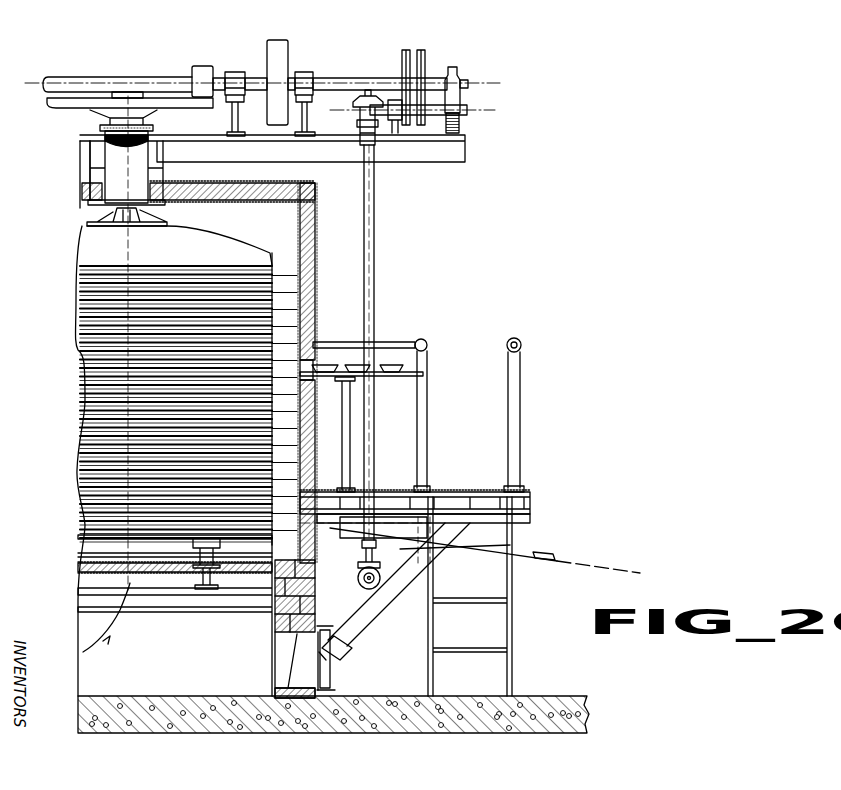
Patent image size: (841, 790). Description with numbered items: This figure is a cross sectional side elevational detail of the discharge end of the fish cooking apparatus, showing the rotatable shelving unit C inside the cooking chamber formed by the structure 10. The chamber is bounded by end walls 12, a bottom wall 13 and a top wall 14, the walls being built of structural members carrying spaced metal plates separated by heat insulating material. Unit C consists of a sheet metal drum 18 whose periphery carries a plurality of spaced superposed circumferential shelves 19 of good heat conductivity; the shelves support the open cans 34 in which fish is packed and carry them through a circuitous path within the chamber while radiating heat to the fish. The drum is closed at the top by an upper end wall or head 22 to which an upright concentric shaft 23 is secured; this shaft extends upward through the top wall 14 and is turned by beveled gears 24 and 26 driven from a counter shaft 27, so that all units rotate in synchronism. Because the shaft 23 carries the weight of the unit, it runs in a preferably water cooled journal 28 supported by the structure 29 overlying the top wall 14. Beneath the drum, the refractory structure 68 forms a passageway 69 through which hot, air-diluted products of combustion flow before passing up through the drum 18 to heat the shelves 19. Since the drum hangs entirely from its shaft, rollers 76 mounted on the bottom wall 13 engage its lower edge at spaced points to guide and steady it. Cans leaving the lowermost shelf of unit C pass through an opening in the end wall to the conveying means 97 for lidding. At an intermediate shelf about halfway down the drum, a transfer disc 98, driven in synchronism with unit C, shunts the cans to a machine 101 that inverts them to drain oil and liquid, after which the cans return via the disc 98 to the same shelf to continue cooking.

The structure 10 is at (72, 187).
The end walls 12 is at (312, 252).
The bottom wall 13 is at (182, 573).
The top wall 14 is at (230, 196).
The drum 18 is at (207, 234).
The shelves 19 is at (143, 284).
The upper end wall or head 22 is at (86, 231).
The shaft 23 is at (132, 92).
The beveled gear 24 is at (63, 100).
The beveled gear 26 is at (197, 70).
The counter shaft 27 is at (100, 80).
The journals 28 is at (108, 148).
The structure 29 is at (428, 157).
The open cans 34 is at (318, 364).
The refractory structure 68 is at (84, 712).
The passageway 69 is at (90, 664).
The rollers 76 is at (194, 543).
The conveying means 97 is at (588, 562).
The transfer disc 98 is at (331, 378).
The machine 101 is at (410, 430).
The unit C is at (88, 249).